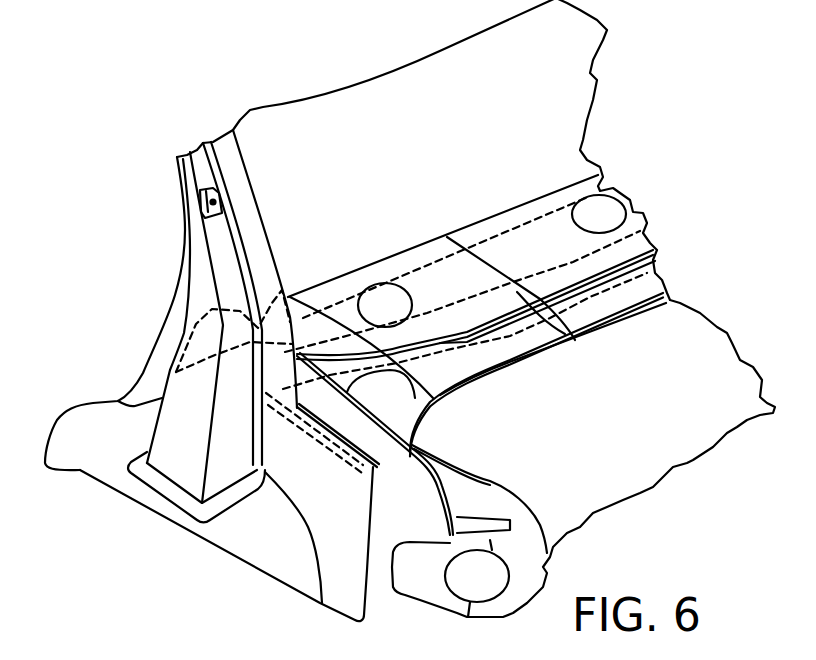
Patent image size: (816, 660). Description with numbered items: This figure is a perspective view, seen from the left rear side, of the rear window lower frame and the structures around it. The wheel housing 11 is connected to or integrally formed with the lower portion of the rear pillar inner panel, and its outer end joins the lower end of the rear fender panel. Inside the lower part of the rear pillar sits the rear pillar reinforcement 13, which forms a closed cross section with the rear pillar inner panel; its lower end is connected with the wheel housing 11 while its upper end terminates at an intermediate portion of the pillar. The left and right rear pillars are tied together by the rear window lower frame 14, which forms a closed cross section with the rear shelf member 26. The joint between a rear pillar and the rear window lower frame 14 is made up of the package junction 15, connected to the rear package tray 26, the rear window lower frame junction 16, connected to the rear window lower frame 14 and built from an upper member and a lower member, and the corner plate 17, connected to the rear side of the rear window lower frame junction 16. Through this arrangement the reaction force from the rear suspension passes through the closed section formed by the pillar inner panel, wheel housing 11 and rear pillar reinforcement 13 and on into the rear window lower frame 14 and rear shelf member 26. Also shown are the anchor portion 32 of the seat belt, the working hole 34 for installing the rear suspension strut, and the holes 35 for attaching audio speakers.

The wheel housing 11 is at (257, 551).
The rear pillar reinforcement 13 is at (187, 483).
The rear window lower frame 14 is at (645, 256).
The package junction 15 is at (313, 322).
The rear window lower frame junction 16 is at (337, 353).
The corner plate 17 is at (397, 407).
The rear shelf member 26 is at (543, 242).
The anchor portion of seat belt 32 is at (205, 216).
The working hole 34 is at (286, 292).
The holes for attaching audio speakers 35 is at (390, 283).